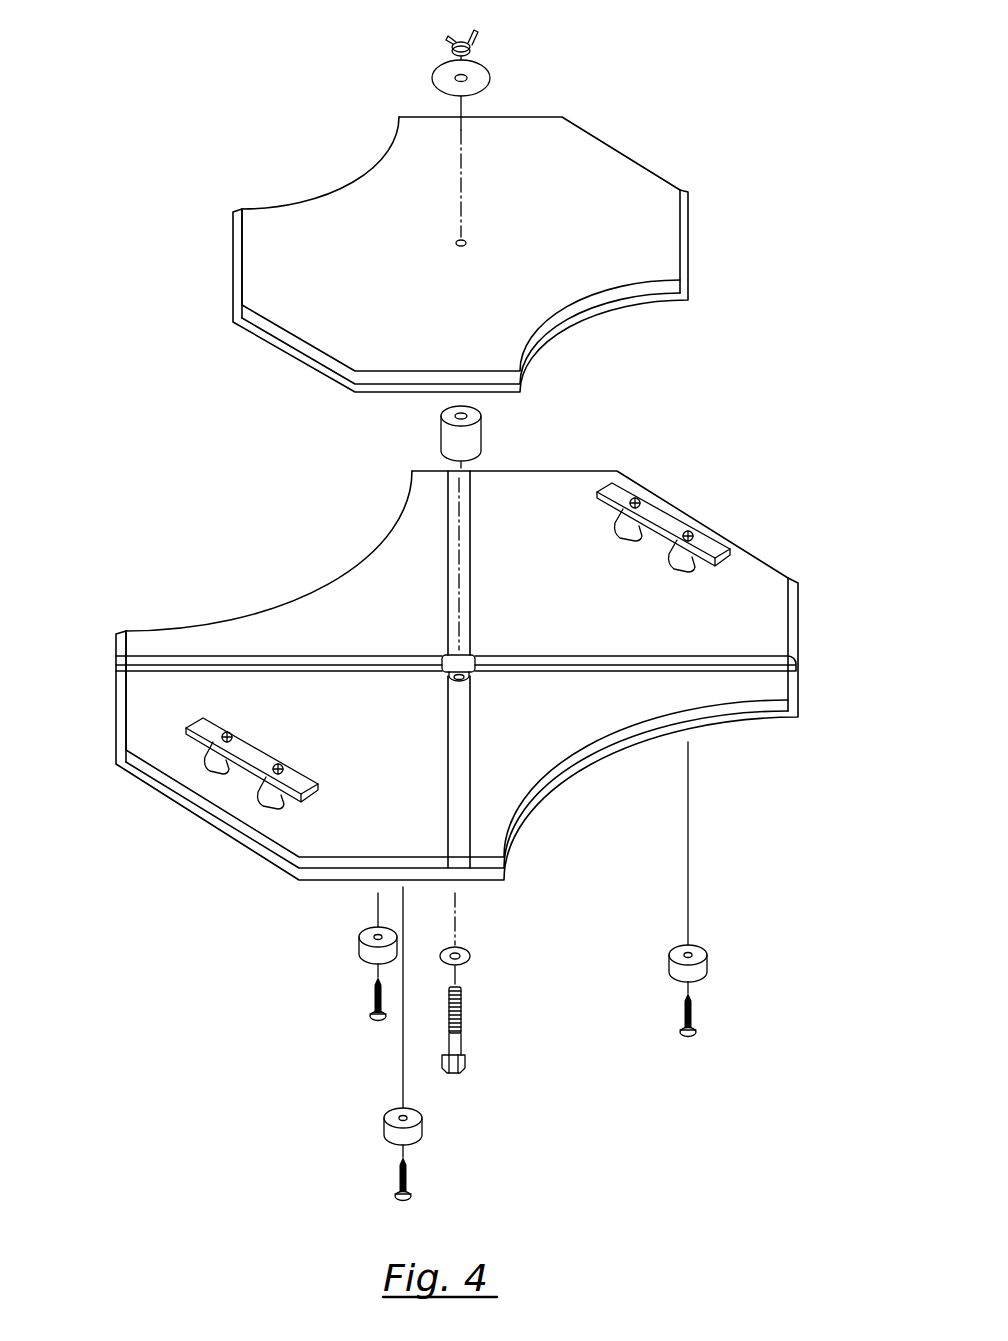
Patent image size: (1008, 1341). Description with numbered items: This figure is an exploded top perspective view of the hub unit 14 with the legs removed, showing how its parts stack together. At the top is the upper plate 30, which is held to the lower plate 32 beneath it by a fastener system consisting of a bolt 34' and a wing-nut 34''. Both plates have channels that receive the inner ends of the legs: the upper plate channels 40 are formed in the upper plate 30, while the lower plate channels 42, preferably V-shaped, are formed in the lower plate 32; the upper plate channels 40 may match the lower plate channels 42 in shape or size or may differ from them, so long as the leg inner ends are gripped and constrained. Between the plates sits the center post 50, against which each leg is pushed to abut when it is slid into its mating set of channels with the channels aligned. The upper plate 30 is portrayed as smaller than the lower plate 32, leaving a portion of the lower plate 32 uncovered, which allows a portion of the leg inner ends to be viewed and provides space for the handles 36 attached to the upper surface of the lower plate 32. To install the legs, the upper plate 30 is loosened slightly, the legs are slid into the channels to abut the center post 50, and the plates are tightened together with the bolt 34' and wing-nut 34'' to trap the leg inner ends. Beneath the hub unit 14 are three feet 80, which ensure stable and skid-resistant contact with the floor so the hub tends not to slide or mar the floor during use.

The hub unit 14 is at (263, 135).
The upper plate 30 is at (315, 215).
The lower plate 32 is at (316, 828).
The bolt 34' is at (493, 983).
The wing-nut 34'' is at (494, 51).
The handles 36 is at (660, 515).
The upper plate channels 40 is at (460, 135).
The lower plate channels 42 is at (455, 519).
The center post 50 is at (463, 438).
The feet 80 is at (365, 952).